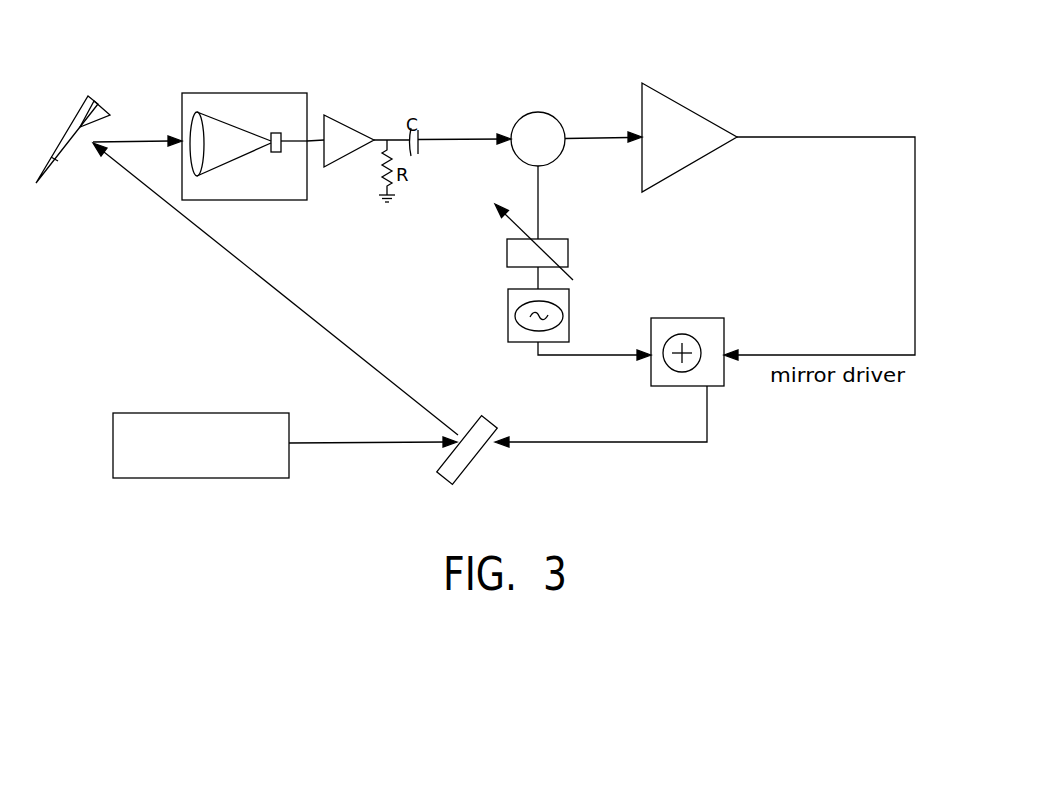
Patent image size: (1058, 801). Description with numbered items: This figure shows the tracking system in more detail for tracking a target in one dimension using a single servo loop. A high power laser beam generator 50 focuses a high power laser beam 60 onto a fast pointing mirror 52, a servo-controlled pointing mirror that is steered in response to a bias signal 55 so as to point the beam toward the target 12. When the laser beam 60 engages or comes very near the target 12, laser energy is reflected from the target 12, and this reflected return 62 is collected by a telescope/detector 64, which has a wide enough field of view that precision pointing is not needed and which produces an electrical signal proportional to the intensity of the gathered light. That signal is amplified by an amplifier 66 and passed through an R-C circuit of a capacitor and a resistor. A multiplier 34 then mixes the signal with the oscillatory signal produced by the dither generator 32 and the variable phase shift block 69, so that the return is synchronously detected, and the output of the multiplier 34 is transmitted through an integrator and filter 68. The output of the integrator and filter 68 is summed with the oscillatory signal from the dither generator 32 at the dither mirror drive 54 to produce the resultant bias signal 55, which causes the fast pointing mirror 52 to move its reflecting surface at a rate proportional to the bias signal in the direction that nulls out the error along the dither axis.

The target 12 is at (68, 133).
The return beam 62 is at (137, 140).
The telescope/detector 64 is at (297, 98).
The amplifier 66 is at (342, 128).
The multiplier 34 is at (537, 113).
The integrator and filter 68 is at (672, 106).
The variable phase shift block 69 is at (566, 250).
The dither generator 32 is at (508, 318).
The dither mirror drive 54 is at (702, 318).
The high power laser beam generator 50 is at (113, 448).
The high power laser beam 60 is at (345, 443).
The fast pointing mirror 52 is at (465, 458).
The bias signal 55 is at (637, 442).